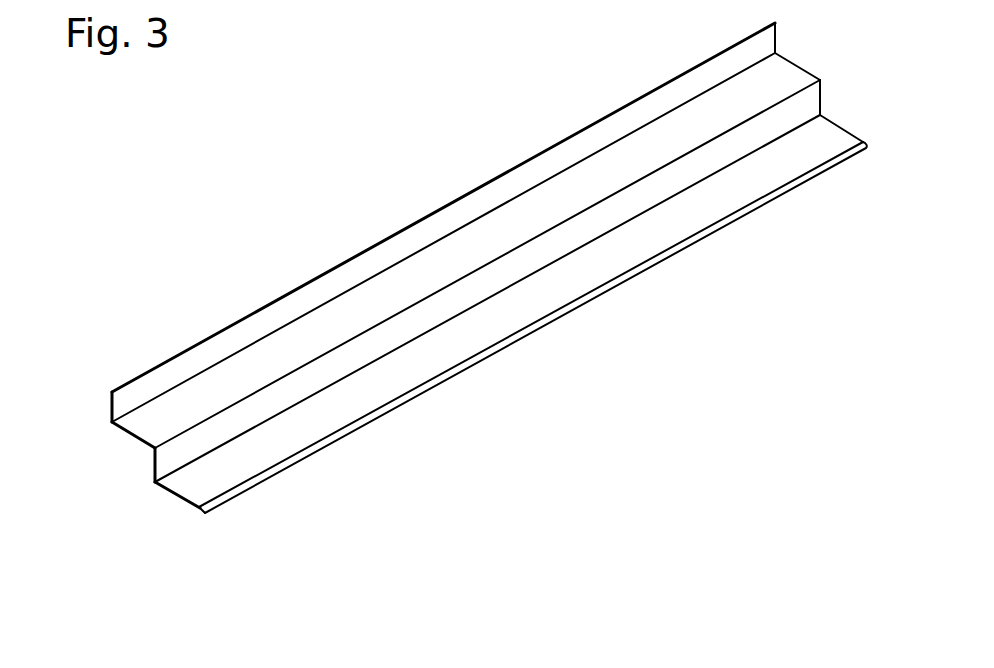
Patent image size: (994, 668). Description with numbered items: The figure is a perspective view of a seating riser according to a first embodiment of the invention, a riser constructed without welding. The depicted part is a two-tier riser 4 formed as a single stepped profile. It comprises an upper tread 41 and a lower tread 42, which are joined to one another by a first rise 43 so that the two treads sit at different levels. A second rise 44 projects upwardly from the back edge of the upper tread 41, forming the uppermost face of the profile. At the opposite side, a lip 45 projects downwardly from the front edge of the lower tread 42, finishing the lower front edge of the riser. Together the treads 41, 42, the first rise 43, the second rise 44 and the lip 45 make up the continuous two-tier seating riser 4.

The two-tier riser 4 is at (252, 226).
The upper tread 41 is at (160, 415).
The lower tread 42 is at (227, 477).
The first rise 43 is at (415, 318).
The second rise 44 is at (213, 348).
The lip 45 is at (330, 444).